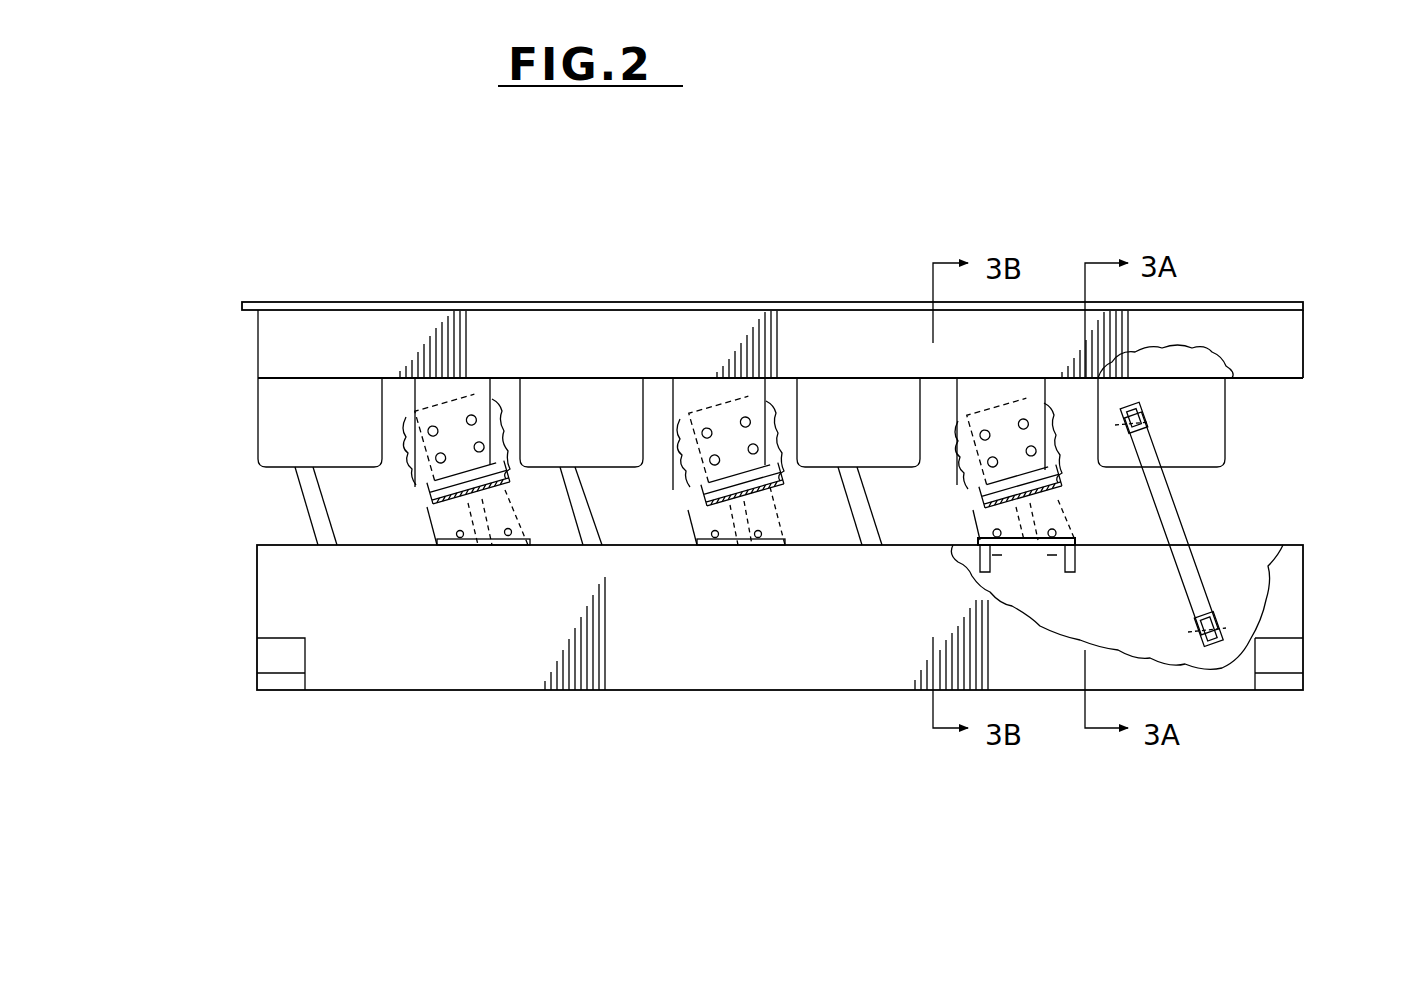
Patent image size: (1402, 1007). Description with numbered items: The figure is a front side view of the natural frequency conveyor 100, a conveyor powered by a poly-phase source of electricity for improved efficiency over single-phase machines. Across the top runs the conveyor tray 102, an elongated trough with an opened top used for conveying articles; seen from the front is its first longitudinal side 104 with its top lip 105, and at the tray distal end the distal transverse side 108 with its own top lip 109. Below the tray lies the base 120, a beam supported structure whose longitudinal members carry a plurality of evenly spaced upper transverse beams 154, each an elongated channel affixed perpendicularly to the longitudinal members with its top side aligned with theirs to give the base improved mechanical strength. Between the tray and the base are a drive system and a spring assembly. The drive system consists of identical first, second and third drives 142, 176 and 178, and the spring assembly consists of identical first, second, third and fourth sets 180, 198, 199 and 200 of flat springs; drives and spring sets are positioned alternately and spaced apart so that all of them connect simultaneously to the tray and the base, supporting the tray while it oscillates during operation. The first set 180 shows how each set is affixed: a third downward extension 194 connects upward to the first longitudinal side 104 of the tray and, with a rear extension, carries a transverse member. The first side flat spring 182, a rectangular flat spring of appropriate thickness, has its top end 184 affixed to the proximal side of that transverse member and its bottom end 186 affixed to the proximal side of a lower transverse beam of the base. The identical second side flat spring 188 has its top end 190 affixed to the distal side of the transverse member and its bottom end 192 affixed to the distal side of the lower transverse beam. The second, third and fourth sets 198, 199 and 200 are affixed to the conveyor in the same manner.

The natural frequency conveyor 100 is at (245, 505).
The conveyor tray 102 is at (225, 318).
The first longitudinal side 104 is at (783, 400).
The top lip 105 is at (495, 300).
The distal transverse side 108 is at (255, 354).
The top lip 109 is at (252, 300).
The base 120 is at (245, 592).
The first drive 142 is at (1063, 478).
The upper transverse beam 154 is at (1120, 596).
The second drive 176 is at (776, 493).
The third drive 178 is at (518, 498).
The first set of flat springs 180 is at (1220, 507).
The first side flat spring 182 is at (1171, 495).
The top end 184 is at (1152, 428).
The bottom end 186 is at (1228, 625).
The second side flat spring 188 is at (1178, 578).
The top end 190 is at (1122, 437).
The bottom end 192 is at (1190, 632).
The third downward extension 194 is at (1208, 432).
The second set of flat springs 198 is at (878, 493).
The third set of flat springs 199 is at (597, 500).
The fourth set of flat springs 200 is at (330, 494).